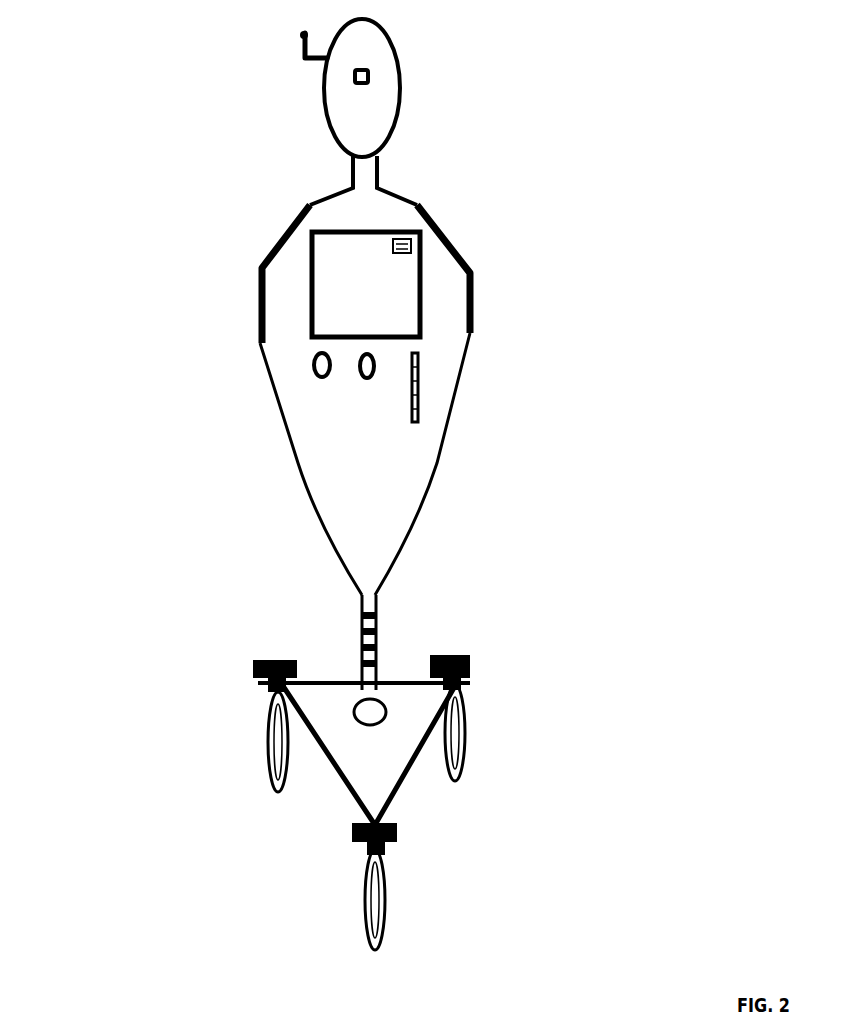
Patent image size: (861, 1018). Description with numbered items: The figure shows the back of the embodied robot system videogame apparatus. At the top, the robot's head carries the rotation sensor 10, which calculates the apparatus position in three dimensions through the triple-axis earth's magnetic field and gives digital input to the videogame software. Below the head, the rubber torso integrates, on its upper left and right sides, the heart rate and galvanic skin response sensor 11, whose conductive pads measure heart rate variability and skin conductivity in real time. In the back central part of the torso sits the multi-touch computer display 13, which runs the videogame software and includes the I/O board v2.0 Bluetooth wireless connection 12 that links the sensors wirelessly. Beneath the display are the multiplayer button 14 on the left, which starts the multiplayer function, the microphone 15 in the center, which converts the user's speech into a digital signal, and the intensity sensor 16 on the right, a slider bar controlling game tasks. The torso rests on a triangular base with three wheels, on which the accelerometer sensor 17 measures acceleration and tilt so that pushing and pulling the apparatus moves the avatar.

The rotation sensor 10 is at (352, 82).
The heart rate and galvanic skin response sensor 11 is at (268, 240).
The I/O board v2.0 Bluetooth wireless connection 12 is at (418, 235).
The multi-touch computer display 13 is at (412, 292).
The multiplayer button 14 is at (314, 368).
The microphone 15 is at (367, 378).
The intensity sensor 16 is at (420, 417).
The accelerometer sensor 17 is at (265, 708).